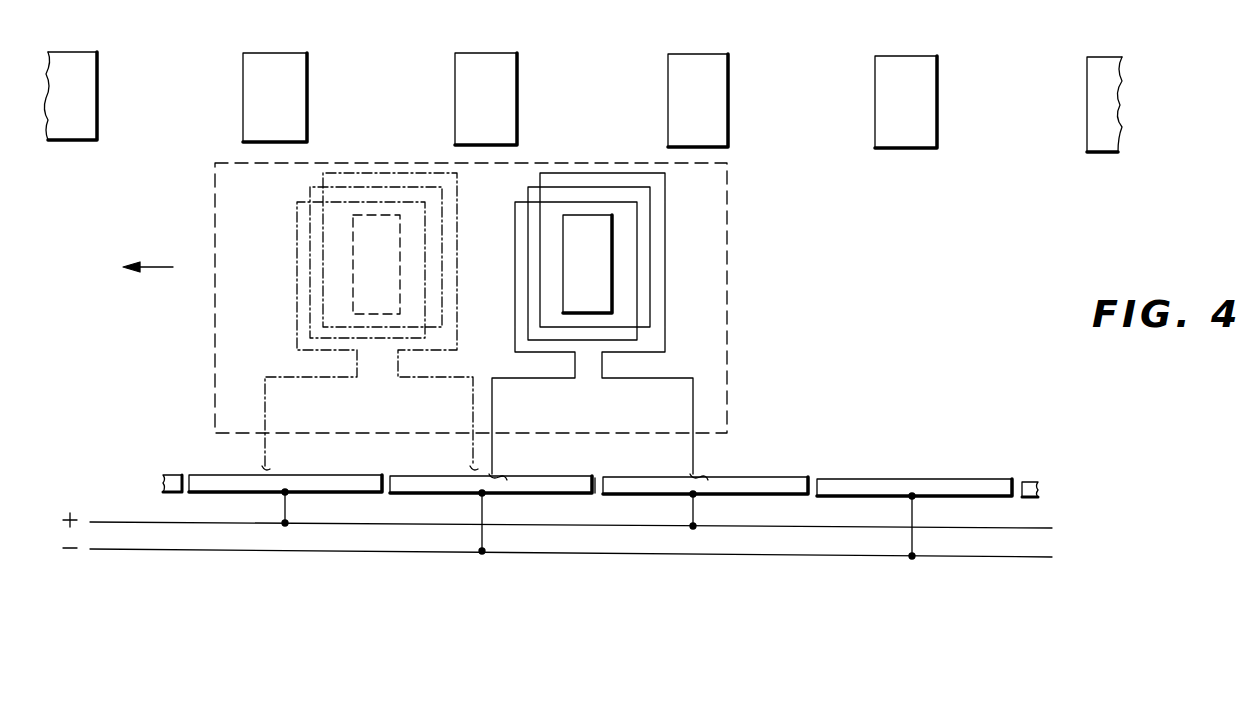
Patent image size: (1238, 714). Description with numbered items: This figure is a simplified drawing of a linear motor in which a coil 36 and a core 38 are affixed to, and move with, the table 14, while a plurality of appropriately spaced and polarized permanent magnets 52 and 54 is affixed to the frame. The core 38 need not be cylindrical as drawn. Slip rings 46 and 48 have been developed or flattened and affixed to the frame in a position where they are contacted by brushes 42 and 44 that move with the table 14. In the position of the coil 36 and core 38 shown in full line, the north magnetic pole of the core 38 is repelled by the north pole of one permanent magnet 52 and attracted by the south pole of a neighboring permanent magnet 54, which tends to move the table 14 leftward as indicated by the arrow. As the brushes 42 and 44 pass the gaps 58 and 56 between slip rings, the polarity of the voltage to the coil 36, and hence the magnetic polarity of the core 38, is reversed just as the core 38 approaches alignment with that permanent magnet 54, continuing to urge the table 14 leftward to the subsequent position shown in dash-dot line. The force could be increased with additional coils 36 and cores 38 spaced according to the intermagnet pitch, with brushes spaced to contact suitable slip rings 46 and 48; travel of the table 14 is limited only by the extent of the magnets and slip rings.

The table 14 is at (728, 318).
The coil 36 is at (458, 276).
The core 38 is at (400, 238).
The brush 42 is at (508, 476).
The brush 44 is at (700, 470).
The slip ring 46 is at (1033, 481).
The slip ring 48 is at (527, 475).
The permanent magnet 52 is at (307, 90).
The permanent magnet 54 is at (97, 84).
The gap 56 is at (163, 253).
The gap 58 is at (597, 495).